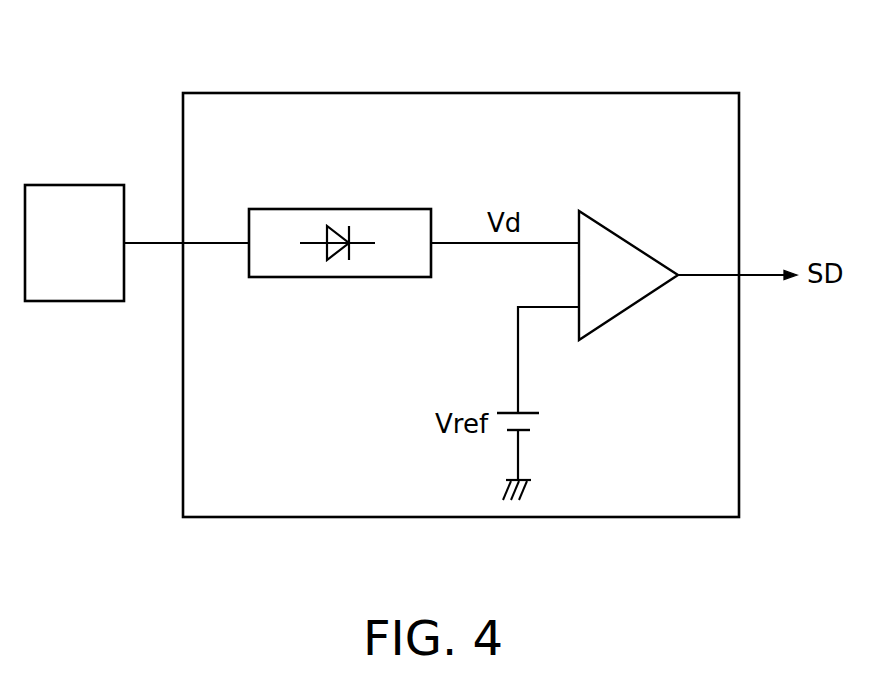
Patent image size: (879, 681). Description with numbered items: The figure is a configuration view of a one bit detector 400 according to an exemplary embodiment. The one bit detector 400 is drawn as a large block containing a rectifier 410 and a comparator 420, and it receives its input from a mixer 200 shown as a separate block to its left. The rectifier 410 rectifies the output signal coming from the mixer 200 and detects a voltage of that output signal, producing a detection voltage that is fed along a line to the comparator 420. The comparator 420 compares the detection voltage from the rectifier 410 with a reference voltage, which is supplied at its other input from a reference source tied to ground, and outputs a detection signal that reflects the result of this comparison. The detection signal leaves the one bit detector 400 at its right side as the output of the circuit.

The 1 bit detector 400 is at (481, 93).
The mixer 200 is at (74, 243).
The rectifier 410 is at (339, 209).
The comparator 420 is at (631, 245).